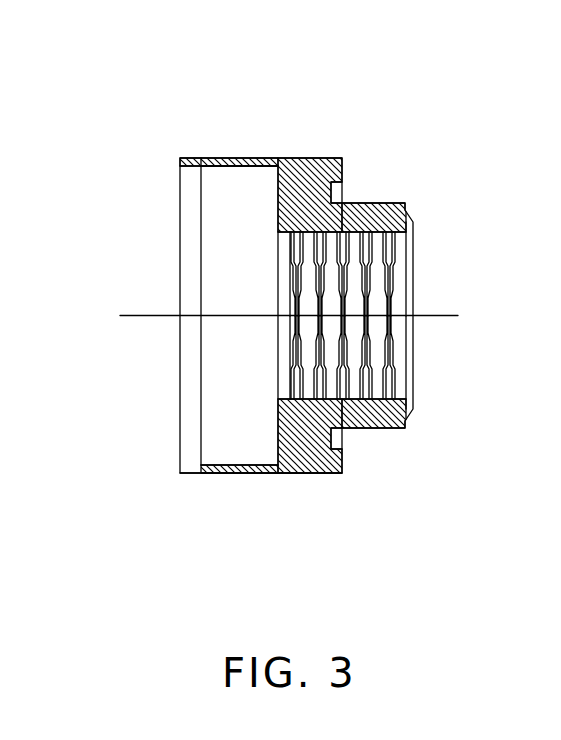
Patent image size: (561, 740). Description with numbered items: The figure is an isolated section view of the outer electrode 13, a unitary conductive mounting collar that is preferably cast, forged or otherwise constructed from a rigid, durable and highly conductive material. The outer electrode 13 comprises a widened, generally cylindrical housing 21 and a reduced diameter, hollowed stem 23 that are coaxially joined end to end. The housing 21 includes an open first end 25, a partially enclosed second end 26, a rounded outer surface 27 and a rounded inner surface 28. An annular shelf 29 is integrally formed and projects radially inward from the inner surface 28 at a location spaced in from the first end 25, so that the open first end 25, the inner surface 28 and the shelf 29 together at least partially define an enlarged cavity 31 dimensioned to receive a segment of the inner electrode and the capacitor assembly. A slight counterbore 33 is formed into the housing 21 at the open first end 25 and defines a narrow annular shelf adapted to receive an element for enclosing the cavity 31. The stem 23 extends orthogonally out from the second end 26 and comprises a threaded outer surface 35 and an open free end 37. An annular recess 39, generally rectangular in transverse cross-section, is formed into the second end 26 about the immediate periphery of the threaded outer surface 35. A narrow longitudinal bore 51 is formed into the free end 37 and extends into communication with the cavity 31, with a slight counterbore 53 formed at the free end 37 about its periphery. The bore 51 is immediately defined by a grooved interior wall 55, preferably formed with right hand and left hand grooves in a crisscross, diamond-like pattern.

The outer electrode 13 is at (186, 514).
The widened cylindrical housing 21 is at (292, 158).
The reduced diameter stem 23 is at (379, 203).
The open first end 25 is at (180, 164).
The partially enclosed second end 26 is at (346, 169).
The rounded outer surface 27 is at (252, 475).
The rounded inner surface 28 is at (224, 168).
The annular shelf 29 is at (278, 429).
The enlarged cavity 31 is at (243, 270).
The counterbore 33 is at (202, 464).
The threaded outer surface 35 is at (392, 430).
The open free end 37 is at (413, 216).
The annular recess 39 is at (344, 449).
The longitudinal bore 51 is at (400, 263).
The counterbore 53 is at (408, 410).
The grooved interior wall 55 is at (376, 372).